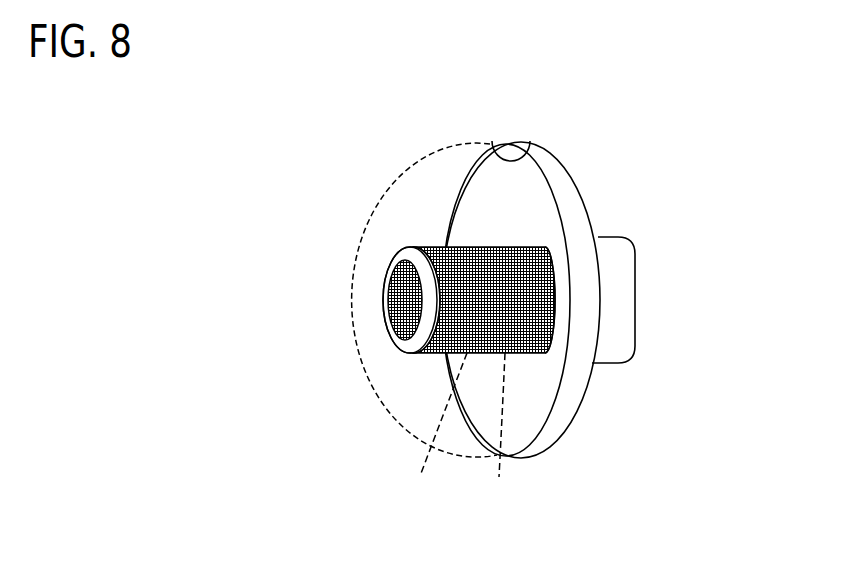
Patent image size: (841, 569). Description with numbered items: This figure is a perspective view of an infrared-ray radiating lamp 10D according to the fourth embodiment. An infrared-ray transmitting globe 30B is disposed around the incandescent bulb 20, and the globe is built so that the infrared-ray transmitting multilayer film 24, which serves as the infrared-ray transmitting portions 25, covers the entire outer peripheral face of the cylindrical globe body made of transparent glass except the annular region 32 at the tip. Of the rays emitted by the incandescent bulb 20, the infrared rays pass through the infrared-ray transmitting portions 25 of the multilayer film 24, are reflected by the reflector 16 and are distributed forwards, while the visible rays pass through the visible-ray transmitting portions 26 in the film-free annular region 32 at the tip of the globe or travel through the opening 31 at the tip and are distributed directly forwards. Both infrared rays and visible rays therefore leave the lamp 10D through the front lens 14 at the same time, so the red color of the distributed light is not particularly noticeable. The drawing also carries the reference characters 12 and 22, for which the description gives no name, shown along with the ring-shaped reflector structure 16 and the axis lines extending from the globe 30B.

The infrared-ray radiating lamp 10D is at (346, 299).
The ring / holder 12 is at (569, 173).
The front lens 14 is at (381, 196).
The reflector 16 is at (492, 139).
The incandescent bulb 20 is at (432, 434).
The second axis line 22 is at (502, 434).
The infrared-ray transmitting multilayer film 24 is at (508, 247).
The infrared-ray transmitting portions 25 is at (550, 300).
The visible-ray transmitting portions 26 is at (426, 300).
The infrared-ray transmitting globe 30B is at (428, 247).
The opening 31 is at (392, 322).
The annular region 32 is at (420, 352).